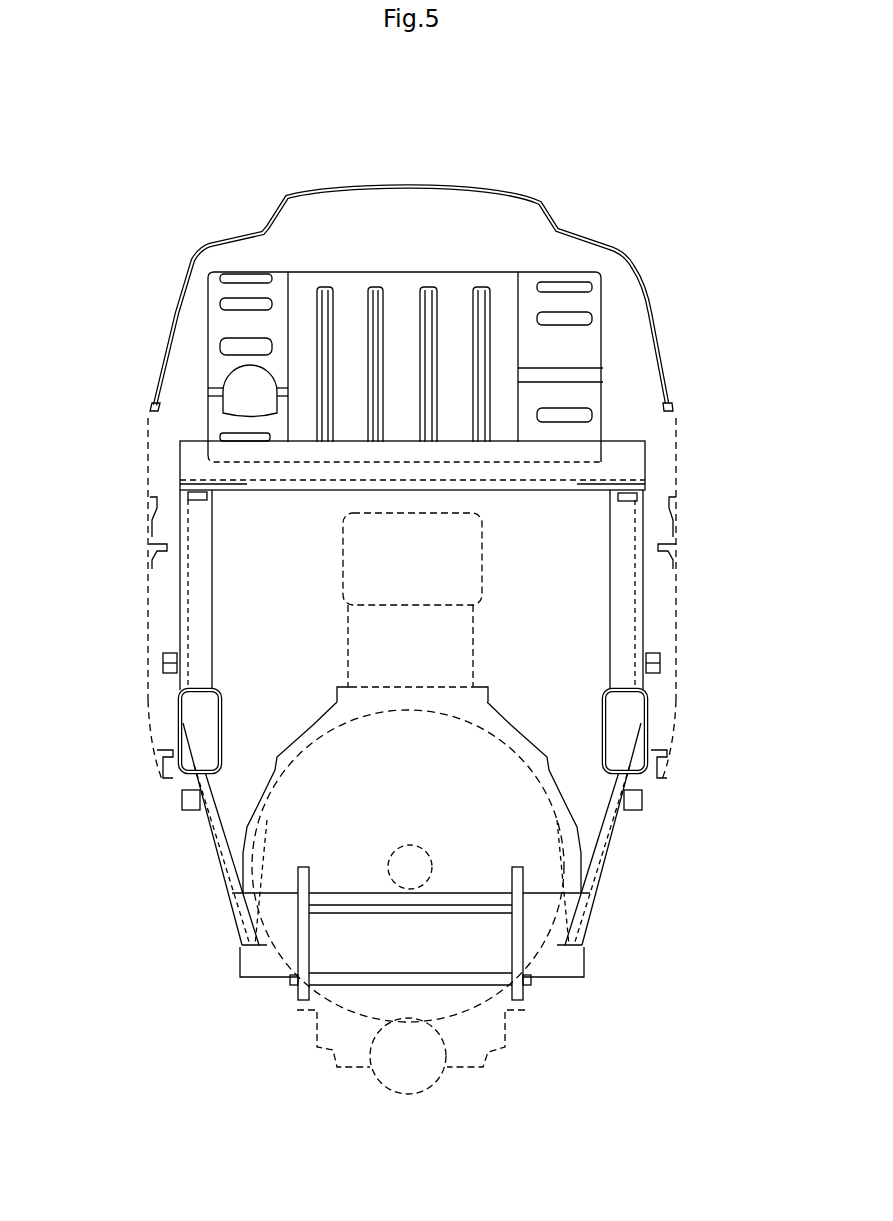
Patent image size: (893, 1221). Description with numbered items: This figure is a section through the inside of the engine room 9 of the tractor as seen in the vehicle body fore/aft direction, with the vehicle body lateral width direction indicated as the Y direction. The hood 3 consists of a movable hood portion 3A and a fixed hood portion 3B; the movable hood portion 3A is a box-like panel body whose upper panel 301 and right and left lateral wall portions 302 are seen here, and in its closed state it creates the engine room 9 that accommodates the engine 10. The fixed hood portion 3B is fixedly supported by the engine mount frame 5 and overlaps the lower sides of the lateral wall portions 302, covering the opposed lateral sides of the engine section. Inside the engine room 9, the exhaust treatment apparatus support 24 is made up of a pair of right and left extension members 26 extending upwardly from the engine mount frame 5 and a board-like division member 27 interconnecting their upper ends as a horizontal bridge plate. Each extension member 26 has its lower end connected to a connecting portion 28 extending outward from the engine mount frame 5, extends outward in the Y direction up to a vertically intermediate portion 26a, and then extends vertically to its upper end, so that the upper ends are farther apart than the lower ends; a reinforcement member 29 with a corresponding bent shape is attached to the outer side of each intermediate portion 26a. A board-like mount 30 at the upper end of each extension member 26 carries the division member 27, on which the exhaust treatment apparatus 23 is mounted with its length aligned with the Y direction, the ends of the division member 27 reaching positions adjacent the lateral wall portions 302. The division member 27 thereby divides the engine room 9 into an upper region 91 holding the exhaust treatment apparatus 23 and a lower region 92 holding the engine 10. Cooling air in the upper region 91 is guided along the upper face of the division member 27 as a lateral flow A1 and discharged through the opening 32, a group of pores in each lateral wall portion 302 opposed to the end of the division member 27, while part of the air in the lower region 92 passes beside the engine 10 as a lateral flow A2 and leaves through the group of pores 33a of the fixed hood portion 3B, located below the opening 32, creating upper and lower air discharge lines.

The hood 3 is at (411, 503).
The upper panel 301 is at (467, 186).
The lateral wall portion 302 is at (163, 350).
The movable hood portion 3A is at (575, 225).
The fixed hood portion 3B is at (150, 770).
The engine room 9 is at (302, 232).
The exhaust treatment apparatus 23 is at (402, 272).
The upper region 91 is at (625, 315).
The lower region 92 is at (580, 661).
The vehicle body lateral width direction Y is at (488, 117).
The upper air flow A1 is at (345, 424).
The lower air flow A2 is at (337, 702).
The opening 32 is at (150, 452).
The group of pores 33a is at (345, 585).
The exhaust treatment apparatus support 24 is at (407, 693).
The board-like mount 30 is at (578, 490).
The extension member 26 is at (187, 623).
The intermediate portion 26a is at (222, 733).
The division member 27 is at (422, 490).
The engine 10 is at (350, 620).
The reinforcement member 29 is at (170, 727).
The connecting portion 28 is at (285, 893).
The engine mount frame 5 is at (300, 957).